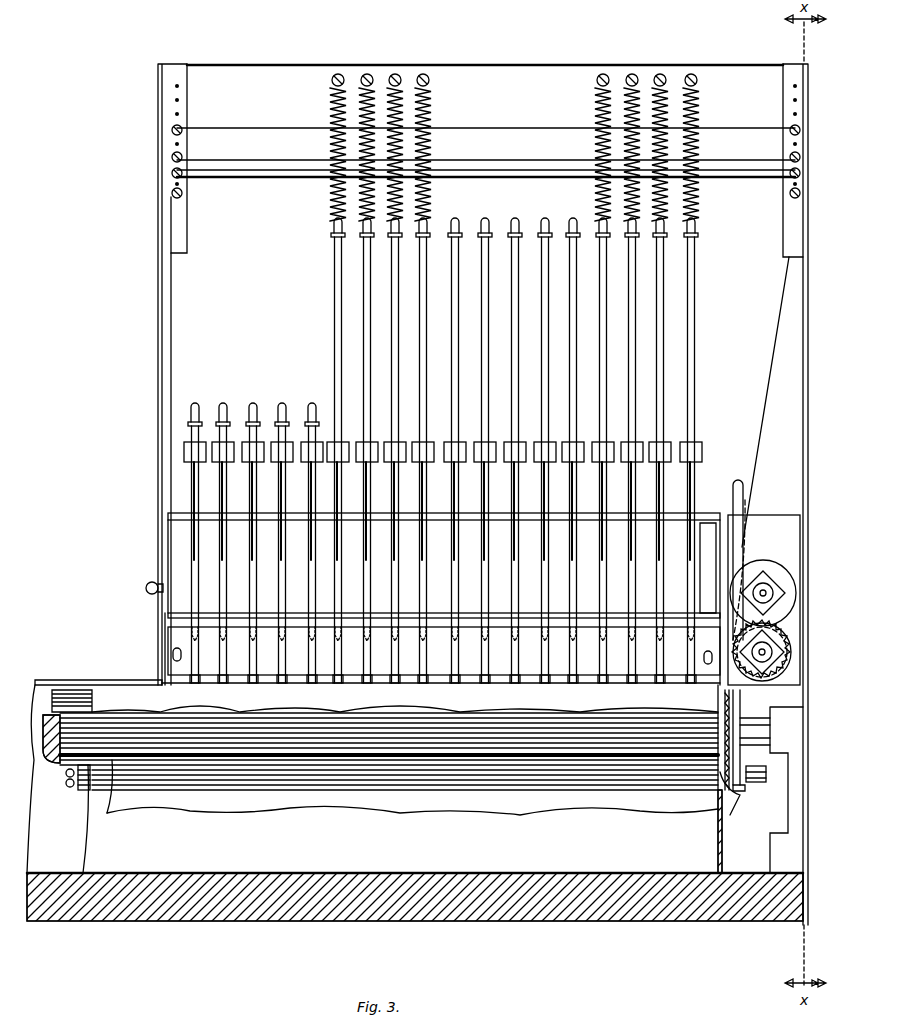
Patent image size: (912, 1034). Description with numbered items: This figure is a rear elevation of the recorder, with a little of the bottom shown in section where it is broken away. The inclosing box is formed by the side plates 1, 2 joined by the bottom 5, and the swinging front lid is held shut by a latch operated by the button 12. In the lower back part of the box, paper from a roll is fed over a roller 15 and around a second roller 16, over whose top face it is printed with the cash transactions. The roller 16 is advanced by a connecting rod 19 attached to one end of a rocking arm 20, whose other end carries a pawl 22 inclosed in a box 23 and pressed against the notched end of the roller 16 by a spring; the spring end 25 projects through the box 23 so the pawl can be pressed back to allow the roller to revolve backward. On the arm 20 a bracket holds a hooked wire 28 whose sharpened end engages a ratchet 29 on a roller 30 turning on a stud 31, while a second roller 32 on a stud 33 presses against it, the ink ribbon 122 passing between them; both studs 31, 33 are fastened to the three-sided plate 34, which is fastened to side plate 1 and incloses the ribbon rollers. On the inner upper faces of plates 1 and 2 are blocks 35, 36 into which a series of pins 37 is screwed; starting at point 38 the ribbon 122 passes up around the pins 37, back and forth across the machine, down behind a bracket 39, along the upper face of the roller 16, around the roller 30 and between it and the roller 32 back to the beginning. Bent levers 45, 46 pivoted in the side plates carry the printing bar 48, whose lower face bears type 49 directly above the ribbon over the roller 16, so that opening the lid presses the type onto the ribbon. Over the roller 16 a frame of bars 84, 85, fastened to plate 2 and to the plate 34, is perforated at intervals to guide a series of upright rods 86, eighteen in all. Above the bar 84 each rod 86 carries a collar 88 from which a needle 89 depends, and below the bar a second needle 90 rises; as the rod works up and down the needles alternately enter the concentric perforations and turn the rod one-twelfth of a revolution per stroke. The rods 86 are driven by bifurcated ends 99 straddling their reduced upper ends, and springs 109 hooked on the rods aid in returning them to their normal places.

The side plate 1 is at (801, 494).
The side plate 2 is at (162, 374).
The bottom 5 is at (415, 911).
The button 12 is at (144, 589).
The roller 15 is at (70, 782).
The roller 16 is at (389, 749).
The connecting rod 19 is at (746, 690).
The rocking arm 20 is at (761, 706).
The pawl 22 is at (737, 798).
The box 23 is at (765, 782).
The end of spring 25 is at (740, 786).
The hooked wire 28 is at (756, 698).
The ratchet 29 is at (782, 643).
The roller 30 is at (786, 630).
The stud 31 is at (778, 659).
The roller 32 is at (767, 593).
The stud 33 is at (766, 578).
The three-sided plate 34 is at (764, 600).
The block 35 is at (177, 148).
The block 36 is at (793, 152).
The pins 37 is at (172, 193).
The point 38 is at (772, 376).
The bracket 39 is at (164, 625).
The bent lever 45 is at (703, 658).
The bent lever 46 is at (182, 655).
The printing bar 48 is at (441, 655).
The type 49 is at (234, 682).
The cross bar 84 is at (444, 505).
The bar 85 is at (444, 606).
The upright rods 86 is at (510, 450).
The collar 88 is at (443, 452).
The needle 89 is at (586, 487).
The needle 90 is at (609, 541).
The bifurcated end 99 is at (514, 230).
The springs 109 is at (430, 103).
The ink ribbon 122 is at (204, 130).